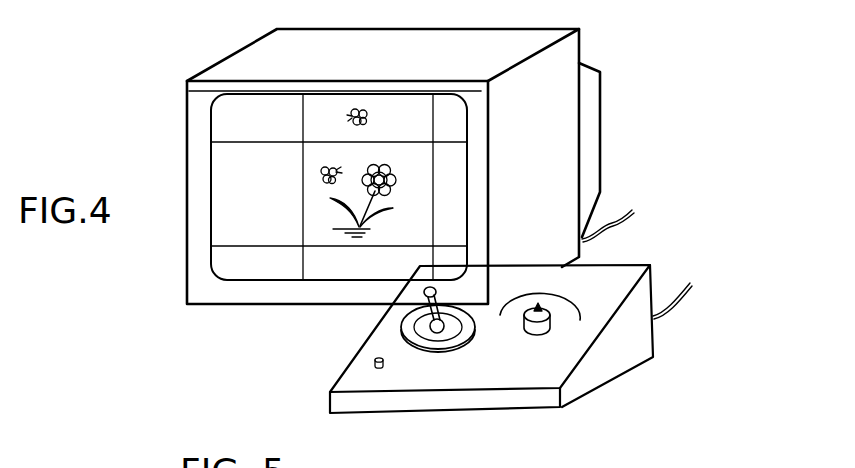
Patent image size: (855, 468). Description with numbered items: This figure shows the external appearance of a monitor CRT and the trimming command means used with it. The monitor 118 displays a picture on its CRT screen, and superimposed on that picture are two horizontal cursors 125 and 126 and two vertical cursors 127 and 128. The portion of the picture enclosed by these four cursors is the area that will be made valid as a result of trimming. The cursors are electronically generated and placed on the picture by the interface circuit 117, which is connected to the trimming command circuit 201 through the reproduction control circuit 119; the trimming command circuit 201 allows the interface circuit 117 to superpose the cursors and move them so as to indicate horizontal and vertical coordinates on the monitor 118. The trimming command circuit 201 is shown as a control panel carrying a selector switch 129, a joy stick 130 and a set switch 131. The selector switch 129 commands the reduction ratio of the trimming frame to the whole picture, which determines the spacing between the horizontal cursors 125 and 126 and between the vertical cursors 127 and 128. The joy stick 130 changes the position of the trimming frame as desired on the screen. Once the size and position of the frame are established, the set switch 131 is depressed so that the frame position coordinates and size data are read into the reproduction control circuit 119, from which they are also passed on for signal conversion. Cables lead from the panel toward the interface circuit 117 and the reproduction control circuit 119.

The monitor 118 is at (195, 79).
The horizontal cursor 125 is at (230, 142).
The horizontal cursor 126 is at (233, 246).
The vertical cursor 127 is at (304, 263).
The vertical cursor 128 is at (433, 170).
The selector switch 129 is at (542, 328).
The joy stick 130 is at (447, 328).
The set switch 131 is at (372, 365).
The trimming command circuit 201 is at (368, 338).
The interface circuit 117 is at (635, 218).
The reproduction control circuit 119 is at (684, 287).